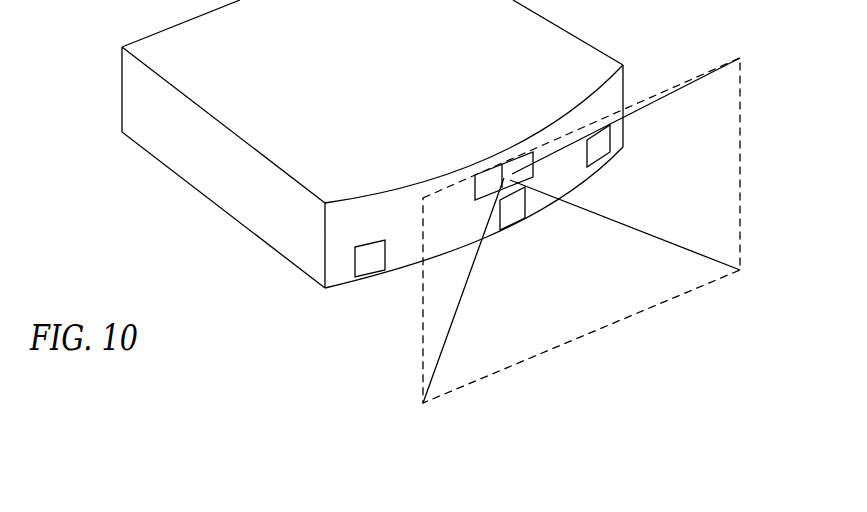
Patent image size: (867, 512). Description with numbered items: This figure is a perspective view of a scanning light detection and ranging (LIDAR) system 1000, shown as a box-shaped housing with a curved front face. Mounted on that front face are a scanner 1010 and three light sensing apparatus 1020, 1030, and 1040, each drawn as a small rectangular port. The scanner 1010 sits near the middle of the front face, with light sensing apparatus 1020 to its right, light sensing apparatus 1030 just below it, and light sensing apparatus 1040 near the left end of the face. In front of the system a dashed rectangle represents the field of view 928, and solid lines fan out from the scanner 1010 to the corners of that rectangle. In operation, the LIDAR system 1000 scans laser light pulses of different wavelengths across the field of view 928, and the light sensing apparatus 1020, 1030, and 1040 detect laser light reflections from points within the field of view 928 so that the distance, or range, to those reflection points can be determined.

The scanning light detection and ranging system 1000 is at (393, 74).
The scanner 1010 is at (502, 164).
The light sensing apparatus 1020 is at (600, 148).
The light sensing apparatus 1030 is at (512, 215).
The light sensing apparatus 1040 is at (367, 268).
The field of view 928 is at (567, 342).